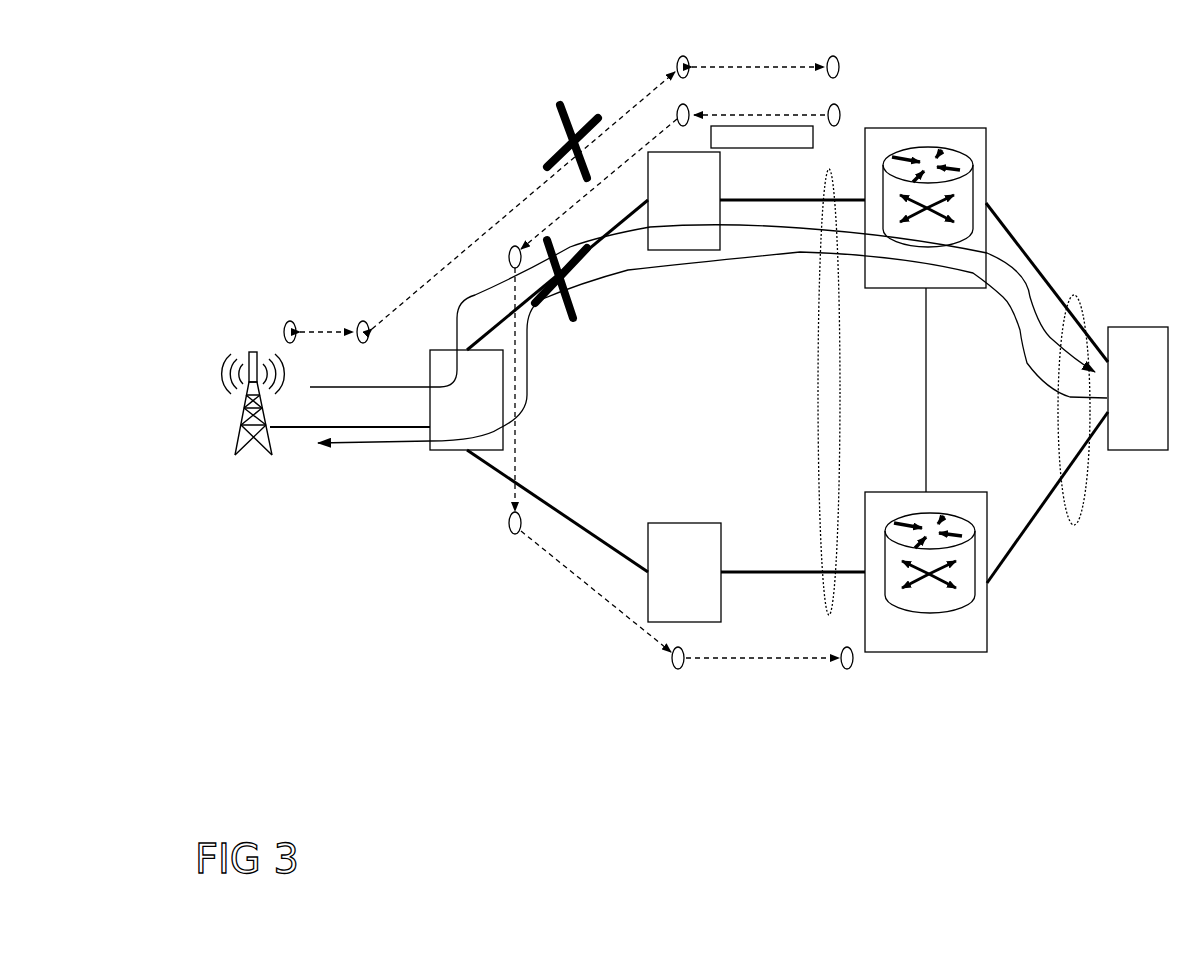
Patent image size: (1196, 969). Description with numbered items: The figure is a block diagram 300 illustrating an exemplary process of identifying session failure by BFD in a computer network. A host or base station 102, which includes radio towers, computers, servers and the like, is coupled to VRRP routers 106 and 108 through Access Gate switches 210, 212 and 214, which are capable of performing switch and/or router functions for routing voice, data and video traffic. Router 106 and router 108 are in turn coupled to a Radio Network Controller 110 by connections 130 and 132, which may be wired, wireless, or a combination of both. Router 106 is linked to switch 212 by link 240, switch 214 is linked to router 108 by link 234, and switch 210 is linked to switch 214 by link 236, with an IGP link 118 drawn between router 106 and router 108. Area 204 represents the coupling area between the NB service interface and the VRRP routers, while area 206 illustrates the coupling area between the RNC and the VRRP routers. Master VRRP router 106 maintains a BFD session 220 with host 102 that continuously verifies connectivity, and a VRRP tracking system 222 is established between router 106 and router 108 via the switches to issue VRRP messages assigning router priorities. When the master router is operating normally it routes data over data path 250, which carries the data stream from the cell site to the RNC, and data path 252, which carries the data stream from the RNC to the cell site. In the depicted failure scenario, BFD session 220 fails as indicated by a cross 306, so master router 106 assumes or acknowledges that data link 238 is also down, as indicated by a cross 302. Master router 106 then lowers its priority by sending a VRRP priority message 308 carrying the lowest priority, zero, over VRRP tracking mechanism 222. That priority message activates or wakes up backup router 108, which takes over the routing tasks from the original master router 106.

The block diagram 300 is at (215, 111).
The host or base station 102 is at (242, 418).
The access gate switch 210 is at (466, 400).
The access gate switch 212 is at (684, 201).
The access gate switch 214 is at (684, 572).
The master VRRP router 106 is at (925, 208).
The backup VRRP router 108 is at (926, 572).
The radio network controller 110 is at (1138, 388).
The IGP link between core routers 118 is at (925, 398).
The connection 130 is at (1035, 267).
The connection 132 is at (1023, 537).
The coupling area 204 is at (815, 372).
The coupling area 206 is at (1055, 402).
The BFD session 220 is at (417, 292).
The VRRP tracking system 222 is at (560, 562).
The link from second aggregation router to second core router 234 is at (803, 573).
The link from cell site router to second aggregation router 236 is at (567, 513).
The data link 238 is at (587, 245).
The link from first aggregation router to first core router 240 is at (738, 197).
The data path 250 is at (350, 446).
The data path 252 is at (350, 387).
The cross 302 is at (578, 295).
The cross 306 is at (553, 157).
The VRRP priority message 308 is at (793, 148).